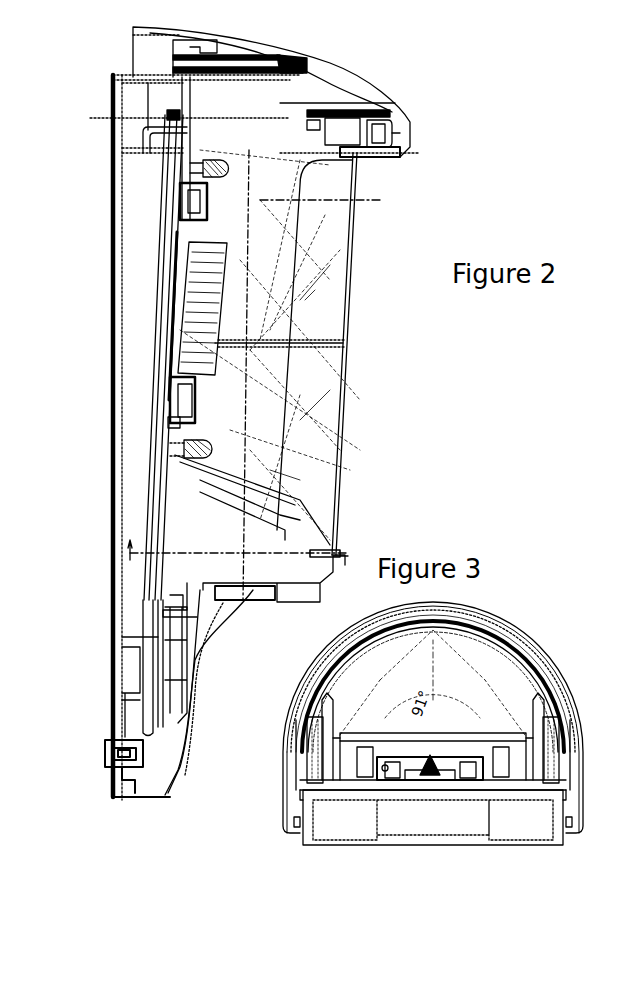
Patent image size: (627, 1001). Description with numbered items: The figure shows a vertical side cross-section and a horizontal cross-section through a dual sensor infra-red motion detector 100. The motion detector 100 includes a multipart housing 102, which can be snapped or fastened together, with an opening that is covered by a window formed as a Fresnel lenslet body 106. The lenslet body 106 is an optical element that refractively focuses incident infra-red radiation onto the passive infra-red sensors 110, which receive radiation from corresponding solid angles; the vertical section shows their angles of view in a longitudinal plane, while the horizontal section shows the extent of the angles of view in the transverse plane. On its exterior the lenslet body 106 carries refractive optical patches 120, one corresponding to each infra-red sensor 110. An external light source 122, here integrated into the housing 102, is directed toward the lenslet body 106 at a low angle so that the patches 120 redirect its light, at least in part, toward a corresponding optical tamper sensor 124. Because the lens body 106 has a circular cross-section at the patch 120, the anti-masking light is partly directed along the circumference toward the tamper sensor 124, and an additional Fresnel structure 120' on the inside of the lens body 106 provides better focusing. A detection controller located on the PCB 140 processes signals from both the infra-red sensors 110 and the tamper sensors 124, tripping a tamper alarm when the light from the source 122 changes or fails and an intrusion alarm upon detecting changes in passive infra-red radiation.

In FIG. 2, the infra-red motion detector 100 is at (122, 334).
In FIG. 2, the housing 102 is at (116, 572).
In FIG. 2, the Fresnel lenslet body 106 is at (534, 645).
In FIG. 2, the infra-red sensor 110 is at (185, 208).
In FIG. 3, the optical patch 120 is at (433, 692).
In FIG. 3, the Fresnel structure 120' is at (433, 692).
In FIG. 2, the external light source 122 is at (400, 143).
In FIG. 2, the optical tamper sensor 124 is at (203, 168).
In FIG. 3, the optical tamper sensor 124 is at (390, 752).
In FIG. 2, the PCB 140 is at (167, 306).